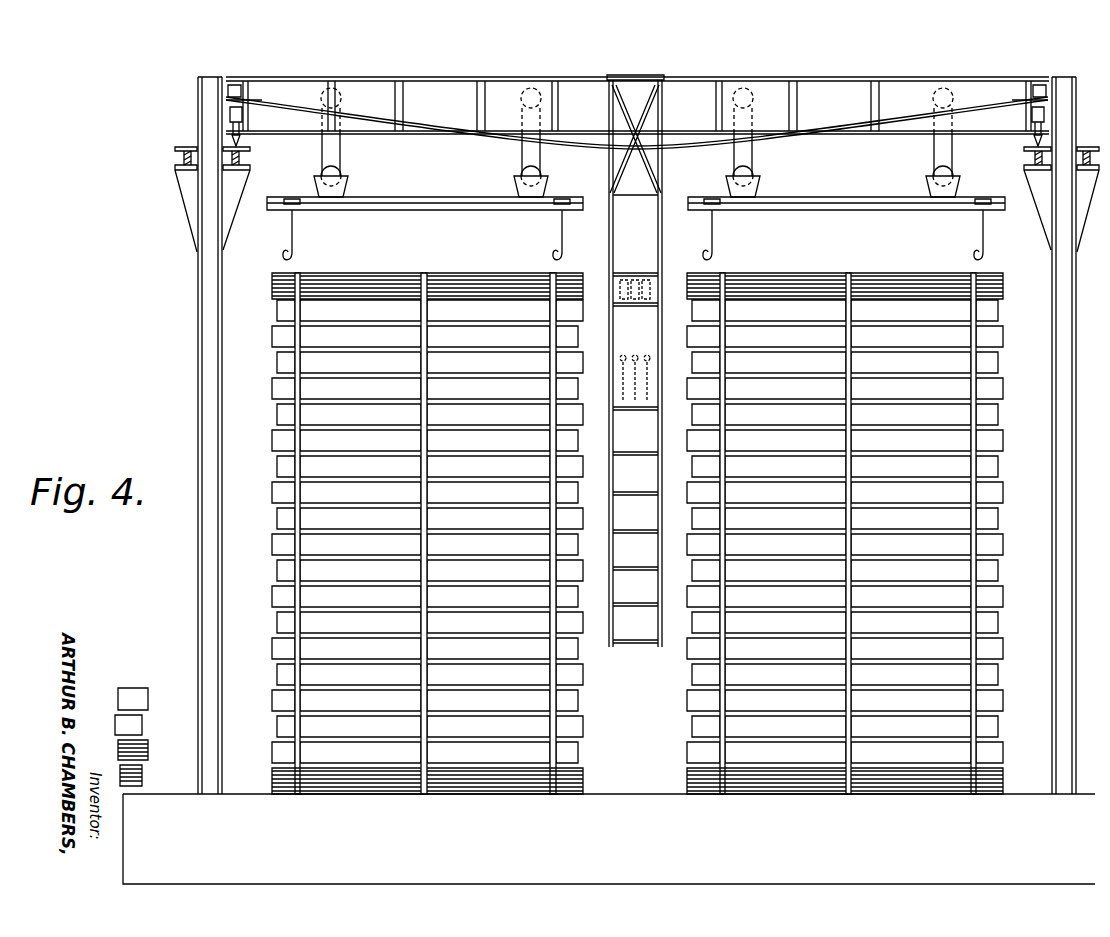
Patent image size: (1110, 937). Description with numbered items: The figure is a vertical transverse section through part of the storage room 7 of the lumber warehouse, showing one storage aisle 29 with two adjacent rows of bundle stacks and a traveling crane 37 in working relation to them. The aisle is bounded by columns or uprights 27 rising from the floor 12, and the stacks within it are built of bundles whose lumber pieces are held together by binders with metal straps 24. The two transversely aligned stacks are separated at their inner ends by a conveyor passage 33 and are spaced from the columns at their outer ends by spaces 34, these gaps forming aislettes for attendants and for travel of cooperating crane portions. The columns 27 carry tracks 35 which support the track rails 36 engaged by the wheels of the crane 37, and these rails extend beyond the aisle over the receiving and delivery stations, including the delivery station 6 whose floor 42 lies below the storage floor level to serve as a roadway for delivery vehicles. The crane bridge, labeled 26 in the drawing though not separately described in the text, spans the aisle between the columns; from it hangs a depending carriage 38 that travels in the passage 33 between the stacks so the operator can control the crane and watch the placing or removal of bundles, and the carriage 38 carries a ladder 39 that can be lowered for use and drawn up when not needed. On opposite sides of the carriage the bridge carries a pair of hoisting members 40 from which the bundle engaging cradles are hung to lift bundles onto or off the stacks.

The delivery station or room 6 is at (582, 766).
The storage room or space 7 is at (233, 297).
The floor of the storage room 12 is at (250, 794).
The metal straps 24 is at (421, 795).
The overhead girder 26 is at (637, 127).
The columns or uprights 27 is at (205, 378).
The aisle or alley 29 is at (640, 531).
The conveyor passage 33 is at (636, 568).
The spaces 34 is at (636, 533).
The tracks 35 is at (247, 171).
The track rails 36 is at (244, 150).
The traveling crane or conveyor 37 is at (443, 125).
The depending carriage 38 is at (635, 242).
The ladder 39 is at (620, 647).
The hoisting members 40 is at (448, 209).
The floor of the delivery room 42 is at (609, 841).